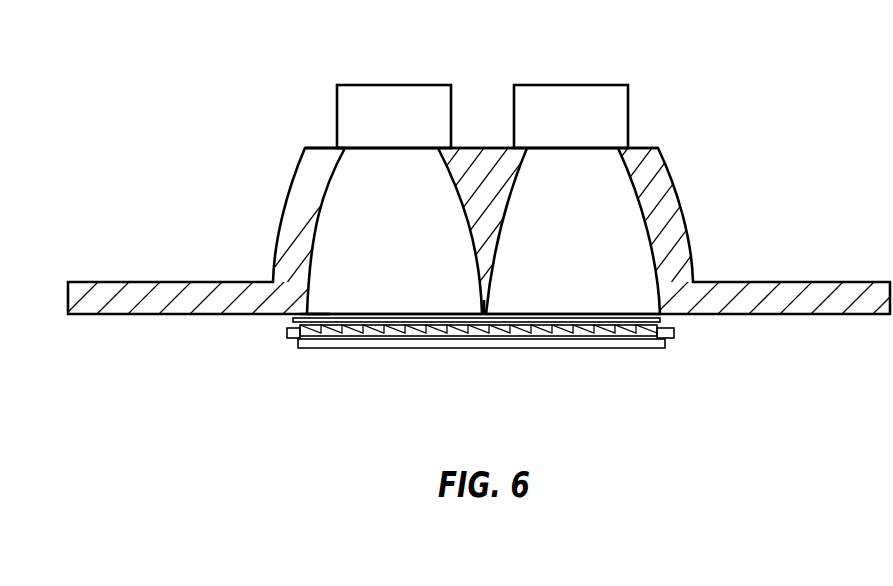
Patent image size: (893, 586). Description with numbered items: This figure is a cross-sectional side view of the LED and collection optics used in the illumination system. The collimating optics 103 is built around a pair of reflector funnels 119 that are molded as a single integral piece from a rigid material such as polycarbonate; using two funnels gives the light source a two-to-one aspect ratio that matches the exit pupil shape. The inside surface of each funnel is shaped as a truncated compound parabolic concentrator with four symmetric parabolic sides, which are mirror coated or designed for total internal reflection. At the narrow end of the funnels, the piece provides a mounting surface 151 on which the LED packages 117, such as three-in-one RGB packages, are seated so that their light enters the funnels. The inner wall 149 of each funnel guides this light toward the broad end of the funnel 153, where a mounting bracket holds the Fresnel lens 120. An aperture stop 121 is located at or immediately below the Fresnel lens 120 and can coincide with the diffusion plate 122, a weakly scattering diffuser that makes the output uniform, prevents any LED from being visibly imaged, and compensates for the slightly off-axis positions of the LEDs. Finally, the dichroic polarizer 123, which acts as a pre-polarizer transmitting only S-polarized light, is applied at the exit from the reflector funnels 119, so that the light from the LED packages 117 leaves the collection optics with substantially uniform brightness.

The collimating optics 103 is at (250, 177).
The LED package 117 is at (372, 85).
The reflector funnel 119 is at (678, 190).
The Fresnel lens 120 is at (568, 322).
The aperture stop 121 is at (670, 338).
The diffusion plate 122 is at (535, 340).
The dichroic polarizer 123 is at (607, 348).
The inner wall of housing 149 is at (313, 247).
The mounting surface 151 is at (343, 147).
The broad end of the funnel 153 is at (310, 308).